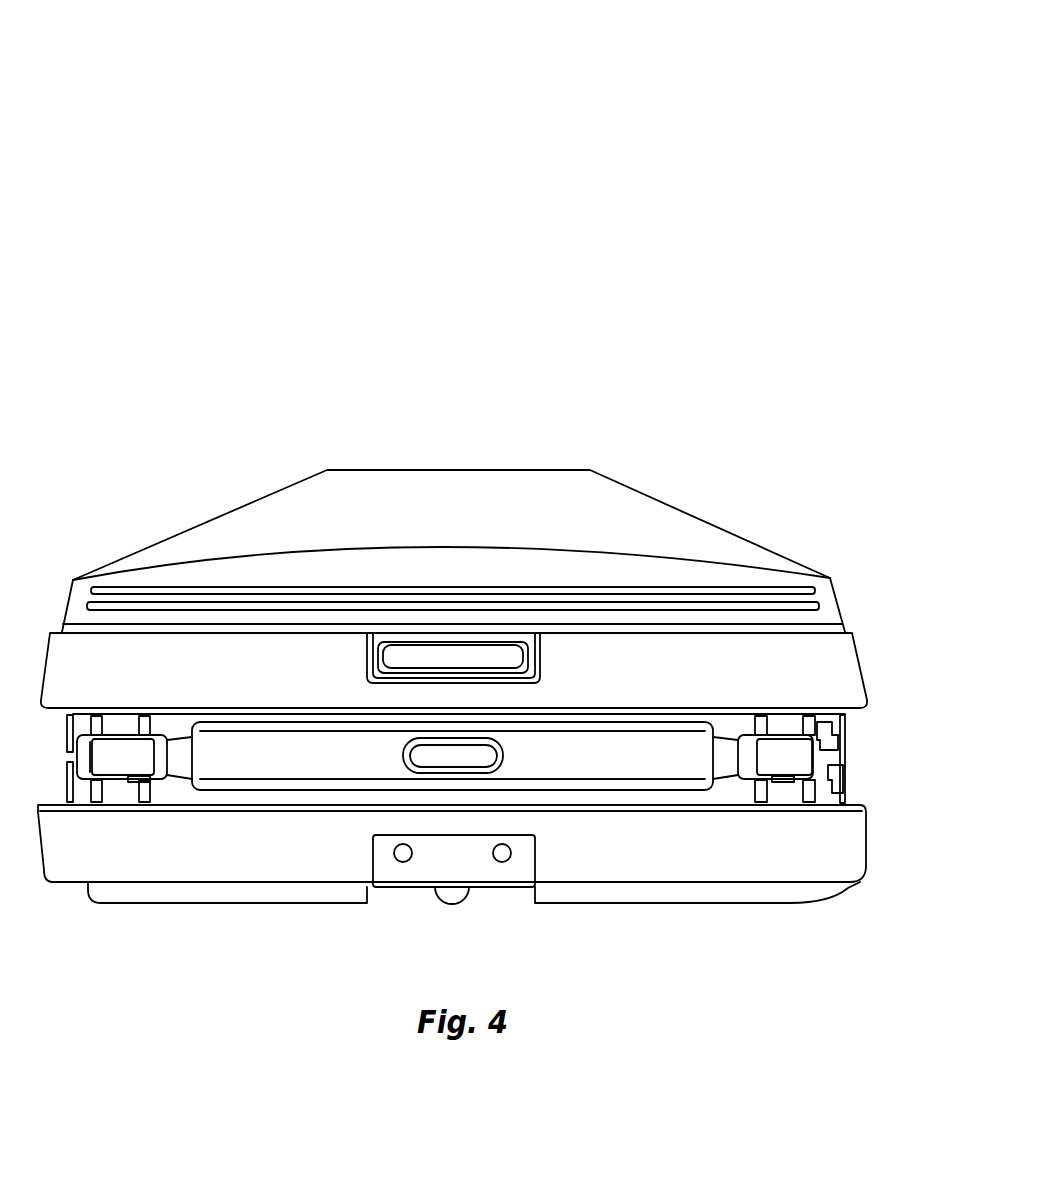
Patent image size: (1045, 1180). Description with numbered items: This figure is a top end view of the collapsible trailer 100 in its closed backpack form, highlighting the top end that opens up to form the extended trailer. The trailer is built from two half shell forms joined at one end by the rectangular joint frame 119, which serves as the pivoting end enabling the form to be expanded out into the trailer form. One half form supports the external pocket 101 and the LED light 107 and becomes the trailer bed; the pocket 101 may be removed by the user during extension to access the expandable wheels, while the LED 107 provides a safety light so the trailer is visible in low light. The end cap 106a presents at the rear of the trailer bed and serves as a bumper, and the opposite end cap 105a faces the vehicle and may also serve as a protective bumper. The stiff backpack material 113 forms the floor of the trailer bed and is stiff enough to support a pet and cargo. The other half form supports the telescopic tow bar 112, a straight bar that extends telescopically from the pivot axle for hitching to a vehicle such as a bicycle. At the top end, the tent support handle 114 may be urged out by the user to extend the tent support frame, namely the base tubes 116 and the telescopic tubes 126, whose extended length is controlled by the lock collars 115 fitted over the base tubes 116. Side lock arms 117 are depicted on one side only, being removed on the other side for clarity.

The collapsible trailer 100 is at (518, 118).
The external pocket 101 is at (464, 515).
The end cap 106a is at (624, 657).
The LED light 107 is at (365, 650).
The tent support handle 114 is at (566, 750).
The telescopic tube 126 is at (729, 759).
The lock collar 115 is at (833, 758).
The side lock arm 117 is at (840, 782).
The tent support base tube 116 is at (141, 758).
The rectangular joint frame 119 is at (152, 788).
The end cap 105a is at (266, 846).
The telescopic tow bar 112 is at (427, 890).
The stiff backpack material 113 is at (627, 903).